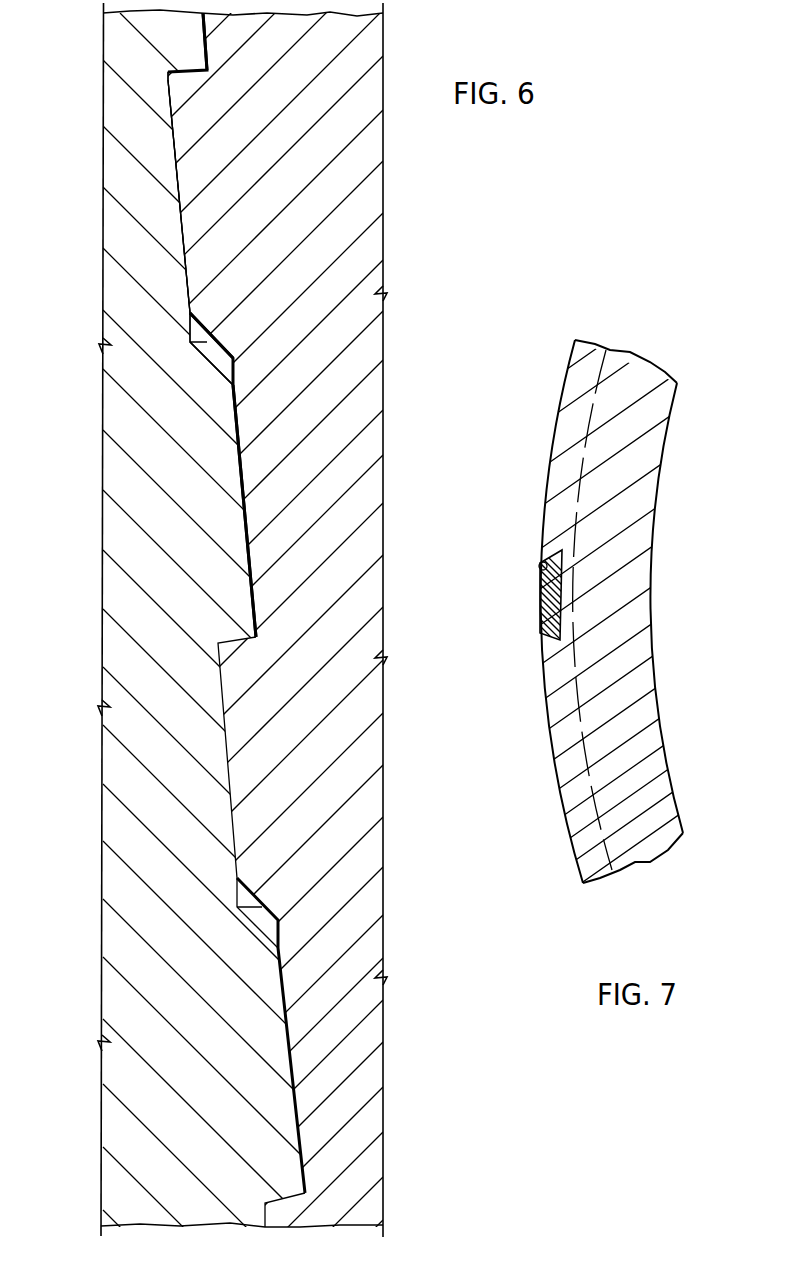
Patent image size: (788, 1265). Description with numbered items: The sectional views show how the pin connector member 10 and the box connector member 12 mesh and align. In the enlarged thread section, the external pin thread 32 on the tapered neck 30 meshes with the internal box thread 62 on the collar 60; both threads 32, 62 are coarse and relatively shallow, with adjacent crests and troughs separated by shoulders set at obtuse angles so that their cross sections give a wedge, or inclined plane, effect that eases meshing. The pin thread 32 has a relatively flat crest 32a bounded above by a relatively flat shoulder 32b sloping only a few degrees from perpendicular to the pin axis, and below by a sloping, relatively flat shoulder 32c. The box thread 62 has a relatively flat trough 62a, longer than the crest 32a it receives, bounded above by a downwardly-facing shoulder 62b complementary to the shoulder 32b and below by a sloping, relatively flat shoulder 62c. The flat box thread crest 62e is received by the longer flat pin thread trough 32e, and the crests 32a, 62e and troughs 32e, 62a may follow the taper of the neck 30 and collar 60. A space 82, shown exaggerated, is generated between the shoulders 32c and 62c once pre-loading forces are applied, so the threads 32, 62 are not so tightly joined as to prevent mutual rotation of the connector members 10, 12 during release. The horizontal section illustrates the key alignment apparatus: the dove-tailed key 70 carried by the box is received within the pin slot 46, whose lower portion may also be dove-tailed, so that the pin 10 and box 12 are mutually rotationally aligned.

In FIG. 7, the pin connector member 10 is at (633, 478).
In FIG. 7, the box connector member 12 is at (572, 778).
In FIG. 6, the neck 30 is at (257, 525).
In FIG. 6, the pin thread 32 is at (246, 640).
In FIG. 6, the pin thread crest 32a is at (182, 196).
In FIG. 6, the pin thread shoulder 32b is at (196, 75).
In FIG. 6, the pin thread shoulder 32c is at (213, 340).
In FIG. 6, the pin thread trough 32e is at (238, 426).
In FIG. 7, the pin slot 46 is at (541, 568).
In FIG. 6, the collar 60 is at (228, 520).
In FIG. 6, the box thread 62 is at (233, 636).
In FIG. 6, the box thread trough 62a is at (177, 251).
In FIG. 6, the box thread shoulder 62b is at (178, 80).
In FIG. 6, the box thread shoulder 62c is at (220, 362).
In FIG. 6, the box thread crest 62e is at (238, 462).
In FIG. 7, the key 70 is at (548, 605).
In FIG. 6, the space 82 is at (212, 347).